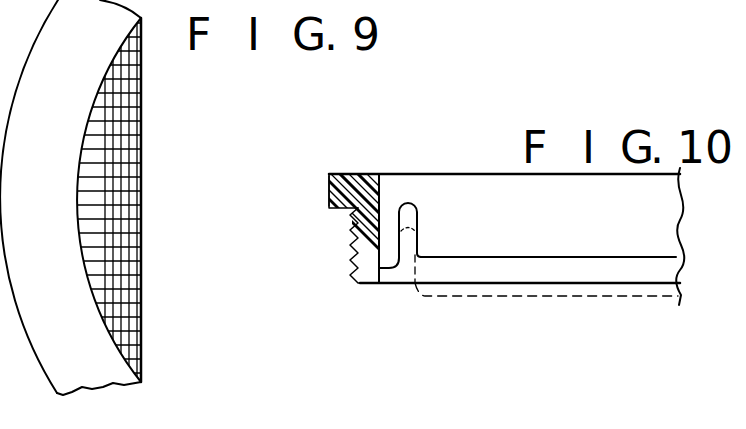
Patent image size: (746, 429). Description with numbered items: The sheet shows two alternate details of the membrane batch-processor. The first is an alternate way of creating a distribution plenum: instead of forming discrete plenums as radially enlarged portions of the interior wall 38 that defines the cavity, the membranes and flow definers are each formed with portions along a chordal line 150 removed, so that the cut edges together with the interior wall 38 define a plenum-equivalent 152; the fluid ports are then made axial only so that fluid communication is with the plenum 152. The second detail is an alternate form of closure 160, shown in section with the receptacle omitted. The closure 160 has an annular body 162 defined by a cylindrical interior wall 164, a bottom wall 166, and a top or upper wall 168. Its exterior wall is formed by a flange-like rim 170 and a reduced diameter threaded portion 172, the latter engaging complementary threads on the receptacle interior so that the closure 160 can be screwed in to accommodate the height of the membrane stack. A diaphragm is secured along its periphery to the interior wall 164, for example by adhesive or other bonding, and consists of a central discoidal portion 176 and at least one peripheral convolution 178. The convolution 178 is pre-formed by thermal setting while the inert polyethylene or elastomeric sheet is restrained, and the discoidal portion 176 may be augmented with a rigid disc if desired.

In FIG. 9, the interior wall 38 is at (86, 216).
In FIG. 9, the chordal line 150 is at (110, 124).
In FIG. 9, the plenum-equivalent 152 is at (92, 170).
In FIG. 10, the closure 160 is at (503, 170).
In FIG. 10, the annular body 162 is at (370, 197).
In FIG. 10, the cylindrical interior wall 164 is at (467, 182).
In FIG. 10, the bottom wall 166 is at (360, 285).
In FIG. 10, the top or upper wall 168 is at (342, 173).
In FIG. 10, the flange-like rim 170 is at (330, 199).
In FIG. 10, the reduced diameter threaded portion 172 is at (352, 248).
In FIG. 10, the central discoidal portion 176 is at (524, 256).
In FIG. 10, the peripheral convolution 178 is at (419, 205).